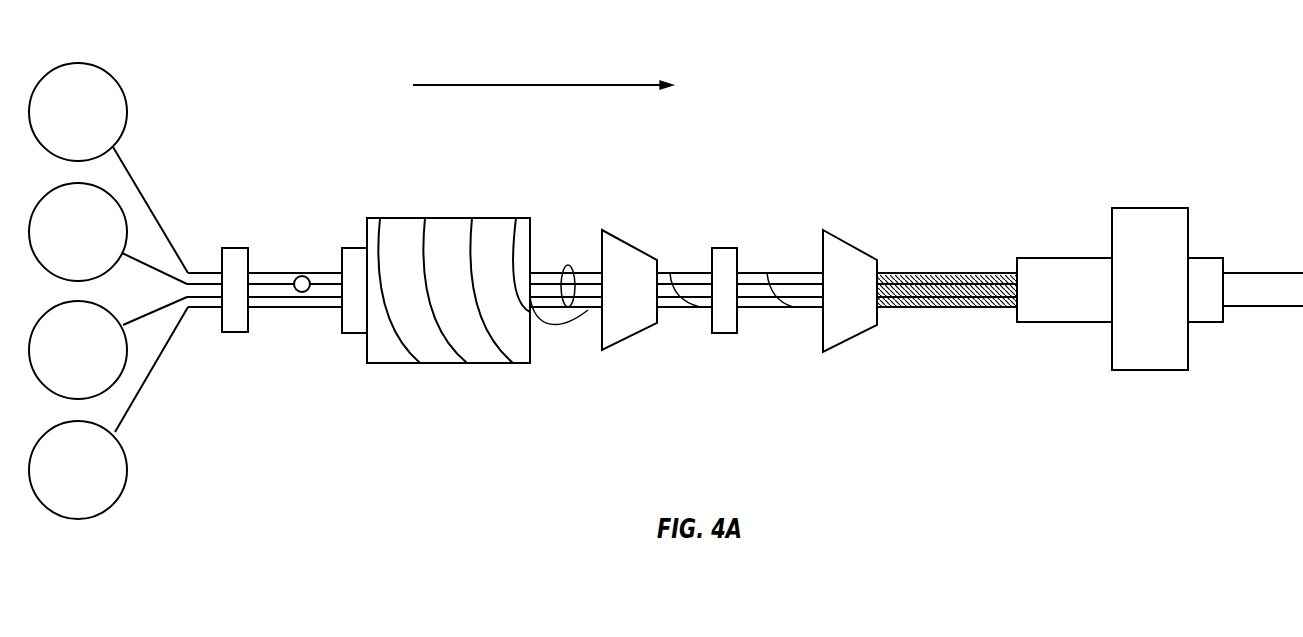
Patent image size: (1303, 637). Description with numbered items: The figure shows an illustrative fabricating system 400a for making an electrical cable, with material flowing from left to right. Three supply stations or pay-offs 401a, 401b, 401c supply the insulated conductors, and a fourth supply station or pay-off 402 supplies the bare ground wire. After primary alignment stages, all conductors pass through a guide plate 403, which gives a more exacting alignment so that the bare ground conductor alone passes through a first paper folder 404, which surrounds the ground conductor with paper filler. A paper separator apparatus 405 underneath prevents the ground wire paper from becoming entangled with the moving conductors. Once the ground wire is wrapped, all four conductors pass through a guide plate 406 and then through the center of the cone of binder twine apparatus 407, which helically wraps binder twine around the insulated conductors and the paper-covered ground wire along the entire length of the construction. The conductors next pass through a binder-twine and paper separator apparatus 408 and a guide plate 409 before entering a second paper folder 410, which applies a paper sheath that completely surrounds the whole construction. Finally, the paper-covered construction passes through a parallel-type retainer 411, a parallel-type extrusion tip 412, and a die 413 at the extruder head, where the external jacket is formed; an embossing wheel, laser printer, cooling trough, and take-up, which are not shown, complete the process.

The fabricating system 400a is at (922, 36).
The supply station or pay-off 401a is at (104, 123).
The supply station or pay-off 401b is at (104, 362).
The supply station or pay-off 401c is at (104, 482).
The supply station or pay-off 402 is at (99, 244).
The guide plate 403 is at (235, 248).
The first paper folder 404 is at (302, 276).
The paper separator apparatus 405 is at (281, 374).
The guide plate 406 is at (354, 248).
The cone of binder twine apparatus 407 is at (445, 218).
The binder-twine and paper separator apparatus 408 is at (628, 250).
The guide plate 409 is at (724, 248).
The second paper folder 410 is at (851, 243).
The parallel-type retainer 411 is at (1065, 258).
The parallel-type extrusion tip 412 is at (1150, 208).
The die 413 is at (1207, 258).